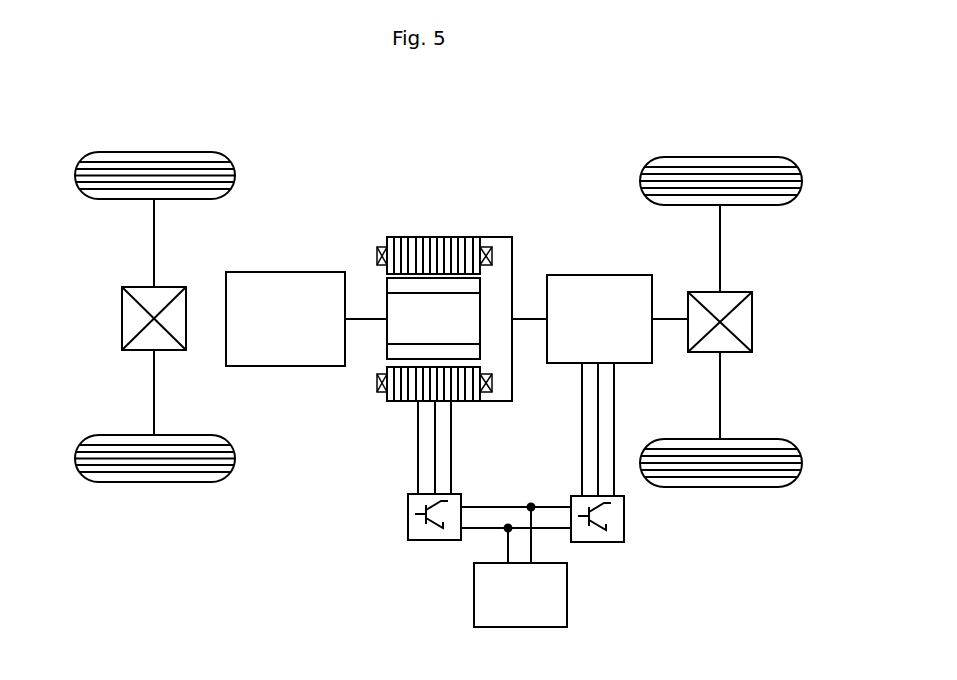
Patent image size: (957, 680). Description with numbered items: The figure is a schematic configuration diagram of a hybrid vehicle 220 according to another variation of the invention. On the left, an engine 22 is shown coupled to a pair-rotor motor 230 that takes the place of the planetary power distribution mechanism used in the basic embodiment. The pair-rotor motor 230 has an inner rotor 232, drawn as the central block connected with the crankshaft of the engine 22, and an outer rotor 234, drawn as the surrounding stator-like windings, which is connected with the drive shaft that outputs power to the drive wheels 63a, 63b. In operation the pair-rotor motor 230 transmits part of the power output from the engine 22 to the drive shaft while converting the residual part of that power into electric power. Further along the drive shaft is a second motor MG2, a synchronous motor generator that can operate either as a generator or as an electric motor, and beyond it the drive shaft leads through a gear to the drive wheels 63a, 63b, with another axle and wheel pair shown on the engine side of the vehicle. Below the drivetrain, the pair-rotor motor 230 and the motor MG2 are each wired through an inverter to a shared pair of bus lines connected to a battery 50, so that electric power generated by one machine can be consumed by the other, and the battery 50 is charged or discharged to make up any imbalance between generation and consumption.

The hybrid vehicle 220 is at (538, 163).
The pair-rotor motor 230 is at (429, 266).
The inner rotor 232 is at (387, 303).
The outer rotor 234 is at (437, 237).
The engine 22 is at (285, 366).
The motor MG2 is at (600, 275).
The drive wheel 63a is at (720, 157).
The drive wheel 63b is at (718, 487).
The battery 50 is at (567, 588).